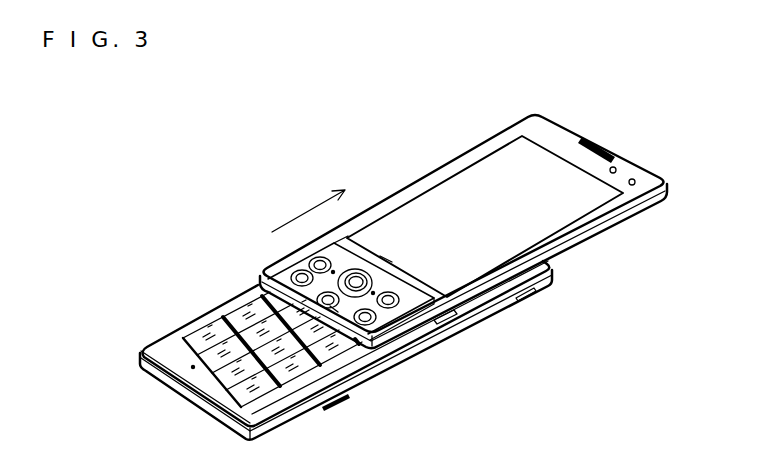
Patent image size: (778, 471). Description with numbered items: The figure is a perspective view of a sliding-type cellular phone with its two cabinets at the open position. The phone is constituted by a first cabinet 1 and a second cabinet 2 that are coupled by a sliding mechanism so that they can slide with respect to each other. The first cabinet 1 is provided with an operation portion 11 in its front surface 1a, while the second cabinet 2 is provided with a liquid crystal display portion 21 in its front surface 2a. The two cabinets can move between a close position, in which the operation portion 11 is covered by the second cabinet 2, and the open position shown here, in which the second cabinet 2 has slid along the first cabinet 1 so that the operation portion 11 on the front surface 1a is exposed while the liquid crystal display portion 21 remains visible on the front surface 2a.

The first cabinet 1 is at (390, 371).
The front surface 1a is at (153, 352).
The operation portion 11 is at (235, 393).
The second cabinet 2 is at (398, 193).
The front surface 2a is at (557, 133).
The liquid crystal display portion 21 is at (488, 173).